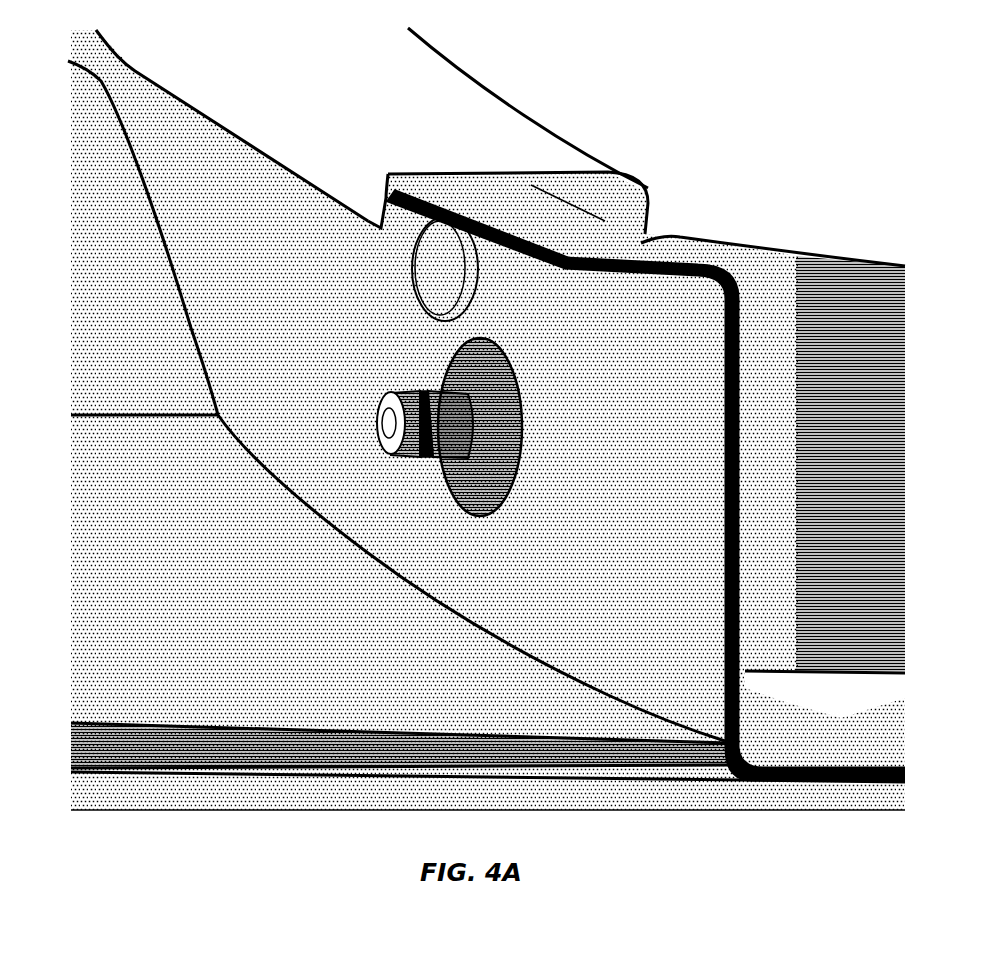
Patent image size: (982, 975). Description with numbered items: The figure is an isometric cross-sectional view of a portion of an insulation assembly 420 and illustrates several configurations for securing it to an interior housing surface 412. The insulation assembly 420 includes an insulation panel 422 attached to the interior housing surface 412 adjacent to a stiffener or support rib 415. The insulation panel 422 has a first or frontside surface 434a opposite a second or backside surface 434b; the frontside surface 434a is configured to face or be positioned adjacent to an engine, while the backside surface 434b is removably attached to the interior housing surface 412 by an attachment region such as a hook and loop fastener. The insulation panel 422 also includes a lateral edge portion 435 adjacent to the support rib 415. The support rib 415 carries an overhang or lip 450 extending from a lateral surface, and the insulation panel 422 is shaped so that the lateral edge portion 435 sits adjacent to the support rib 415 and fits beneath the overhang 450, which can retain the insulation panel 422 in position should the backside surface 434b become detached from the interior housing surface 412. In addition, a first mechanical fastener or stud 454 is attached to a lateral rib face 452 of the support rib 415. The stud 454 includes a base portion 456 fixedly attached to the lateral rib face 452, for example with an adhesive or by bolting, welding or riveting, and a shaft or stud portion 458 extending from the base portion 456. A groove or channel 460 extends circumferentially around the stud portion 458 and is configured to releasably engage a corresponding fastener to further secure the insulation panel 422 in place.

The insulation assembly 420 is at (146, 528).
The lateral rib face 452 is at (680, 517).
The overhang 450 is at (633, 235).
The interior housing surface 412 is at (745, 763).
The support rib 415 is at (737, 680).
The frontside surface 434a is at (349, 725).
The backside surface 434b is at (387, 758).
The lateral edge portion 435 is at (680, 757).
The insulation panel 422 is at (223, 698).
The stud 454 is at (487, 387).
The base portion 456 is at (500, 447).
The stud portion 458 is at (372, 446).
The channel 460 is at (413, 450).